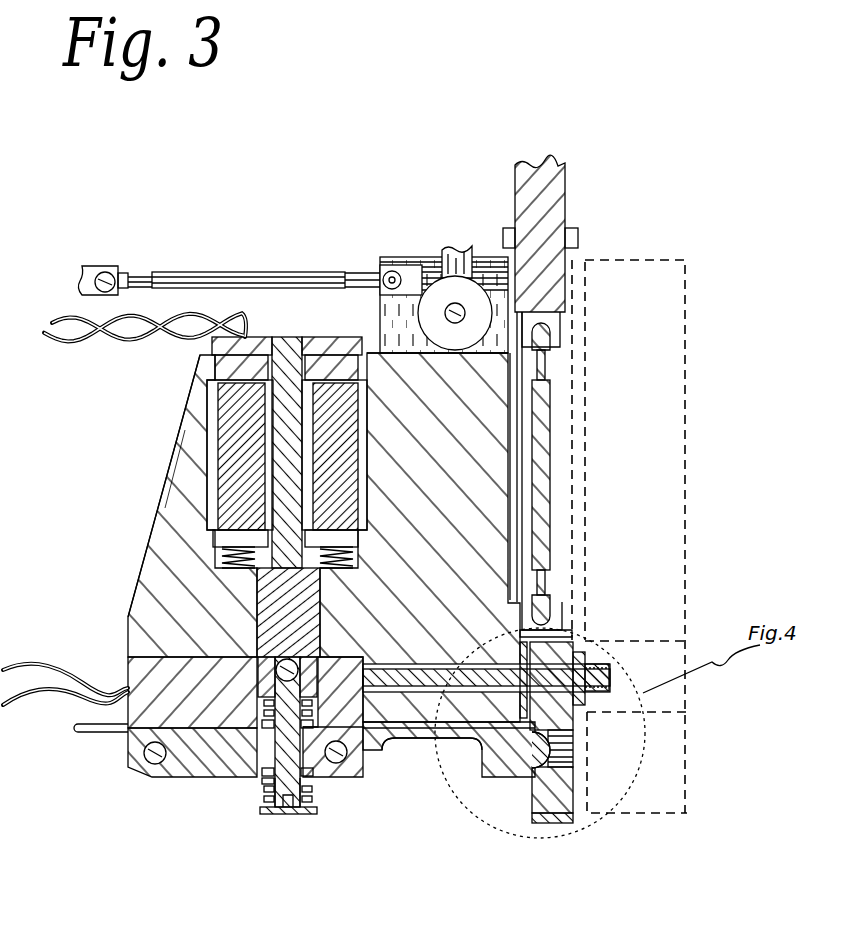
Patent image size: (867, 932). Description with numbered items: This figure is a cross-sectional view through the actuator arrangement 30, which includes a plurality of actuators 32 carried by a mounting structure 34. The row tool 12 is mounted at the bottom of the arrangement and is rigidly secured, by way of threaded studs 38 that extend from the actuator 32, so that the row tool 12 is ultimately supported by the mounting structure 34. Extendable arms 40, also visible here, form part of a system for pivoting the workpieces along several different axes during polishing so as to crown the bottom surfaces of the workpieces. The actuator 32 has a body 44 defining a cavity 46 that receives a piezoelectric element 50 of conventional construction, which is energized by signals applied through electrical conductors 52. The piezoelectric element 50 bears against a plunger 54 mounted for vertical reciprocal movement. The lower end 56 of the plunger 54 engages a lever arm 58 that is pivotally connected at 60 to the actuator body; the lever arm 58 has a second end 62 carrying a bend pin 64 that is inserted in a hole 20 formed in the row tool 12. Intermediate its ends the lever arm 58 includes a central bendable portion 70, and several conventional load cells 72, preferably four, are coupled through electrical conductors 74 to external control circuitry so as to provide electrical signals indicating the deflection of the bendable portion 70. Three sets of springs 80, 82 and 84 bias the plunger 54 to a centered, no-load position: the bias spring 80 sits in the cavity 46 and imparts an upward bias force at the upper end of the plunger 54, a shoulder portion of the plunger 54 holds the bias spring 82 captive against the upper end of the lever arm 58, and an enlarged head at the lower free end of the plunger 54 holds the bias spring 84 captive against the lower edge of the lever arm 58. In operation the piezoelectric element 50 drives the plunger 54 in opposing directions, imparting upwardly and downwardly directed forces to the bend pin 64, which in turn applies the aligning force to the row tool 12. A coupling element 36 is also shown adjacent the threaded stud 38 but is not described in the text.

The row tool 12 is at (563, 712).
The hole 20 is at (565, 757).
The actuator arrangement 30 is at (654, 206).
The actuator 32 is at (168, 468).
The mounting structure 34 is at (402, 262).
The coupling nut 36 is at (582, 660).
The threaded stud 38 is at (425, 677).
The extendable arm 40 is at (198, 272).
The body 44 is at (145, 583).
The cavity 46 is at (363, 478).
The piezoelectric element 50 is at (320, 445).
The electrical conductors 52 is at (80, 338).
The plunger 54 is at (267, 622).
The lower end 56 is at (285, 770).
The lever arm 58 is at (183, 760).
The pivotal connection 60 is at (128, 768).
The second end 62 is at (498, 760).
The bend pin 64 is at (540, 755).
The central bendable portion 70 is at (408, 723).
The load cells 72 is at (262, 728).
The electrical conductors 74 is at (70, 692).
The bias spring 80 is at (165, 508).
The bias spring 82 is at (263, 713).
The bias spring 84 is at (263, 797).